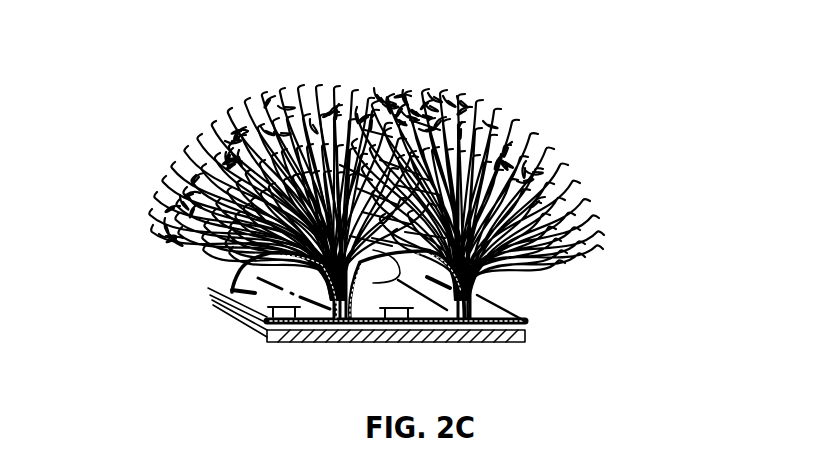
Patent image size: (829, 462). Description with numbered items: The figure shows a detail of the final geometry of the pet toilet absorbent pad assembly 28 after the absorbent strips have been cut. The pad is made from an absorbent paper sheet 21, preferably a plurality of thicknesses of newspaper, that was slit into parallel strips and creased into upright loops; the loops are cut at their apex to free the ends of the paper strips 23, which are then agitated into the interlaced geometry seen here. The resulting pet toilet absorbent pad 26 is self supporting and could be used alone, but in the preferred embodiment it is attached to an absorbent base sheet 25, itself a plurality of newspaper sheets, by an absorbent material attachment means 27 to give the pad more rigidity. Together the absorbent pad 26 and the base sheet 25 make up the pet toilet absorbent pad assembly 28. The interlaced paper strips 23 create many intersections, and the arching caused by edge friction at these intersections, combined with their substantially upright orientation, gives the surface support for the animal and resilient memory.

The absorbent paper sheet 21 is at (208, 289).
The paper strips 23 is at (241, 106).
The absorbent base sheet 25 is at (371, 341).
The pet toilet absorbent pad 26 is at (528, 328).
The absorbent material attachment means 27 is at (265, 288).
The pet toilet absorbent pad assembly 28 is at (205, 305).